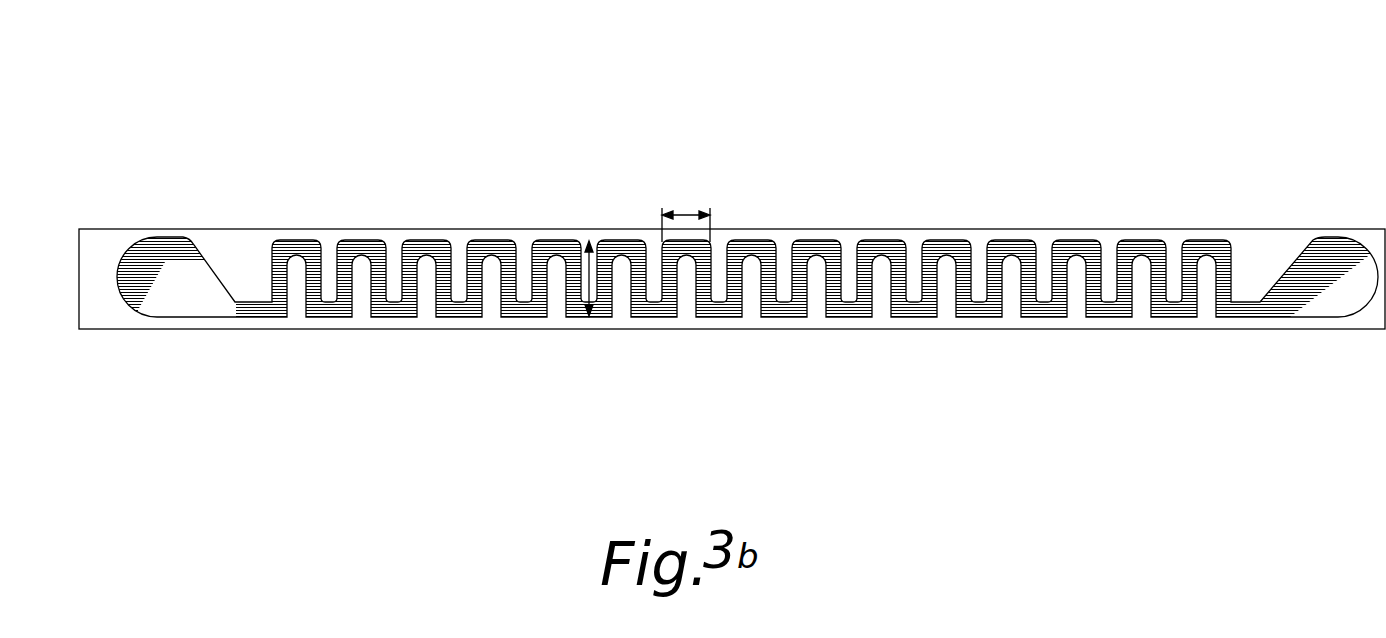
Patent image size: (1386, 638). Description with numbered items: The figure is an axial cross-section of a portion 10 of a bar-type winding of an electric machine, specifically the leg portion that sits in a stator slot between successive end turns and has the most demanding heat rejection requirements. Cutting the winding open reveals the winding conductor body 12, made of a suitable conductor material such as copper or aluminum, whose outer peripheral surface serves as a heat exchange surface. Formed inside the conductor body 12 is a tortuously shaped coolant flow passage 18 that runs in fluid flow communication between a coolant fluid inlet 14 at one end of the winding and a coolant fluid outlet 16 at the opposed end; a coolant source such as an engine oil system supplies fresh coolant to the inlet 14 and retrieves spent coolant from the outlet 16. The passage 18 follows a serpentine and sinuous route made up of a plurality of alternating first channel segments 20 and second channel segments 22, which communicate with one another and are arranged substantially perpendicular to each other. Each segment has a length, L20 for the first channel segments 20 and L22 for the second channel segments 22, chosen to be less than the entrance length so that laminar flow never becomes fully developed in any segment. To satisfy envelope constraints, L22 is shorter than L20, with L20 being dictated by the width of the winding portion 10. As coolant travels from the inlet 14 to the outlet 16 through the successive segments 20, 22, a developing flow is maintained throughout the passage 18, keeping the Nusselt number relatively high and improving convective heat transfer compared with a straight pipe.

The winding portion 10 is at (732, 223).
The winding conductor body 12 is at (225, 250).
The coolant fluid inlet 14 is at (1337, 290).
The coolant fluid outlet 16 is at (160, 260).
The coolant flow passage 18 is at (737, 264).
The first channel segments 20 is at (1093, 292).
The second channel segments 22 is at (1130, 248).
The length of first channel segments L20 is at (592, 276).
The length of second channel segments L22 is at (654, 172).